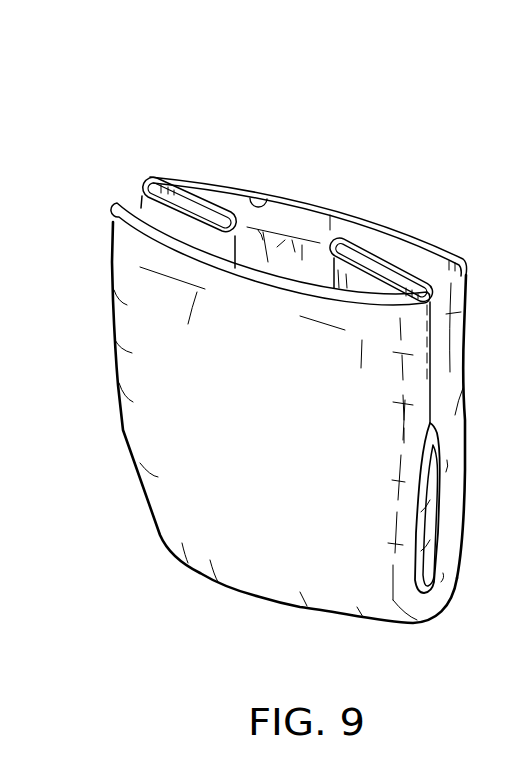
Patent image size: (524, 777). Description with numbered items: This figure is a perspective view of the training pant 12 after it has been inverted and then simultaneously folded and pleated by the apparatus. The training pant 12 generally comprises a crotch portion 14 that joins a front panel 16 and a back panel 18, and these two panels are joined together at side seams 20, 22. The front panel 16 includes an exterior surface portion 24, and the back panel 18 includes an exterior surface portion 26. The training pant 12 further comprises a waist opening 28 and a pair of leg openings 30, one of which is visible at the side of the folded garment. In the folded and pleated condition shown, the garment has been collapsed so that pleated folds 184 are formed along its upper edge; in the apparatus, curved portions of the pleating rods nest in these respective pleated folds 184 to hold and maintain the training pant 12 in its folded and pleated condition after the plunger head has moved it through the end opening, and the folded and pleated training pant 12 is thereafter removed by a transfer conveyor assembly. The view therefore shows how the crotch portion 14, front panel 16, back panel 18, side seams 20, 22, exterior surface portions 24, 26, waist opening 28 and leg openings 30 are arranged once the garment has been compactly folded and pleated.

The training pant 12 is at (338, 106).
The crotch portion 14 is at (273, 603).
The front panel 16 is at (268, 382).
The back panel 18 is at (333, 218).
The side seam 20 is at (240, 212).
The side seam 22 is at (402, 270).
The exterior surface portion 24 is at (230, 432).
The exterior surface portion 26 is at (298, 226).
The waist opening 28 is at (253, 198).
The leg opening 30 is at (440, 503).
The pleated fold 184 is at (178, 207).